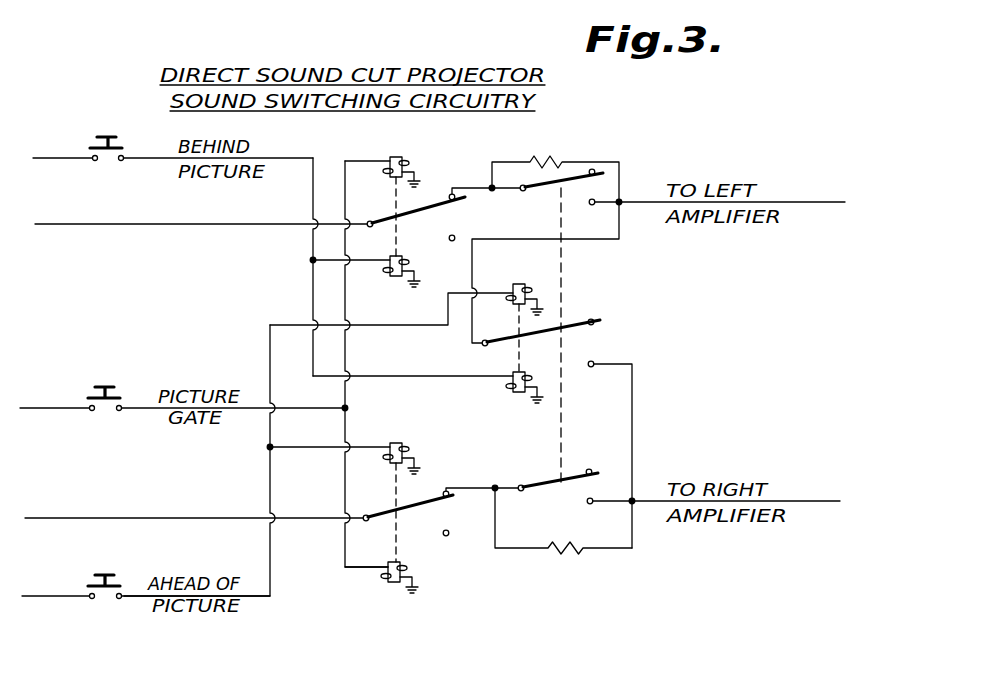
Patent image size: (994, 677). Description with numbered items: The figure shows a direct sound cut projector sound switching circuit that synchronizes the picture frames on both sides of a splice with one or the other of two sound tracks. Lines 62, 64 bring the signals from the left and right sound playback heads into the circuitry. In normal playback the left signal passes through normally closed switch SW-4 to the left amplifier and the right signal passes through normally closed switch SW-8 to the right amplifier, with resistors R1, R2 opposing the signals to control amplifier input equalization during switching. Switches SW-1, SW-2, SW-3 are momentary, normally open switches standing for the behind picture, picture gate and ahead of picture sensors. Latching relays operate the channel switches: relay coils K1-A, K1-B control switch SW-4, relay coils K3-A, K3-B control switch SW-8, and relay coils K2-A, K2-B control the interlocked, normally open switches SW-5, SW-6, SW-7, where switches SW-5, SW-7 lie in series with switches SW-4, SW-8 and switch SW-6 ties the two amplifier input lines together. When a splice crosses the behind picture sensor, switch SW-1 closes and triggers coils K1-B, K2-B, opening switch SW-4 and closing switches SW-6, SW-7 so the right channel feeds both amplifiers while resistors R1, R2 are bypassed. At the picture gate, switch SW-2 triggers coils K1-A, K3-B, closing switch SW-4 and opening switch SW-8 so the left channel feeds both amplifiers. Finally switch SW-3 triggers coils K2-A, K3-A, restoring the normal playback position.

The line 62 is at (88, 226).
The line 64 is at (49, 515).
The switch SW-1 is at (173, 158).
The switch SW-2 is at (182, 408).
The switch SW-3 is at (146, 596).
The normally closed switch SW-4 is at (443, 213).
The switch SW-5 is at (682, 196).
The switch SW-6 is at (561, 433).
The switch SW-7 is at (679, 478).
The normally closed switch SW-8 is at (440, 501).
The relay coil K1-A is at (391, 163).
The relay coil K1-B is at (384, 270).
The relay coil K2-A is at (406, 297).
The relay coil K2-B is at (428, 378).
The relay coil K3-A is at (345, 446).
The relay coil K3-B is at (402, 577).
The resistor R1 is at (545, 241).
The resistor R2 is at (563, 521).